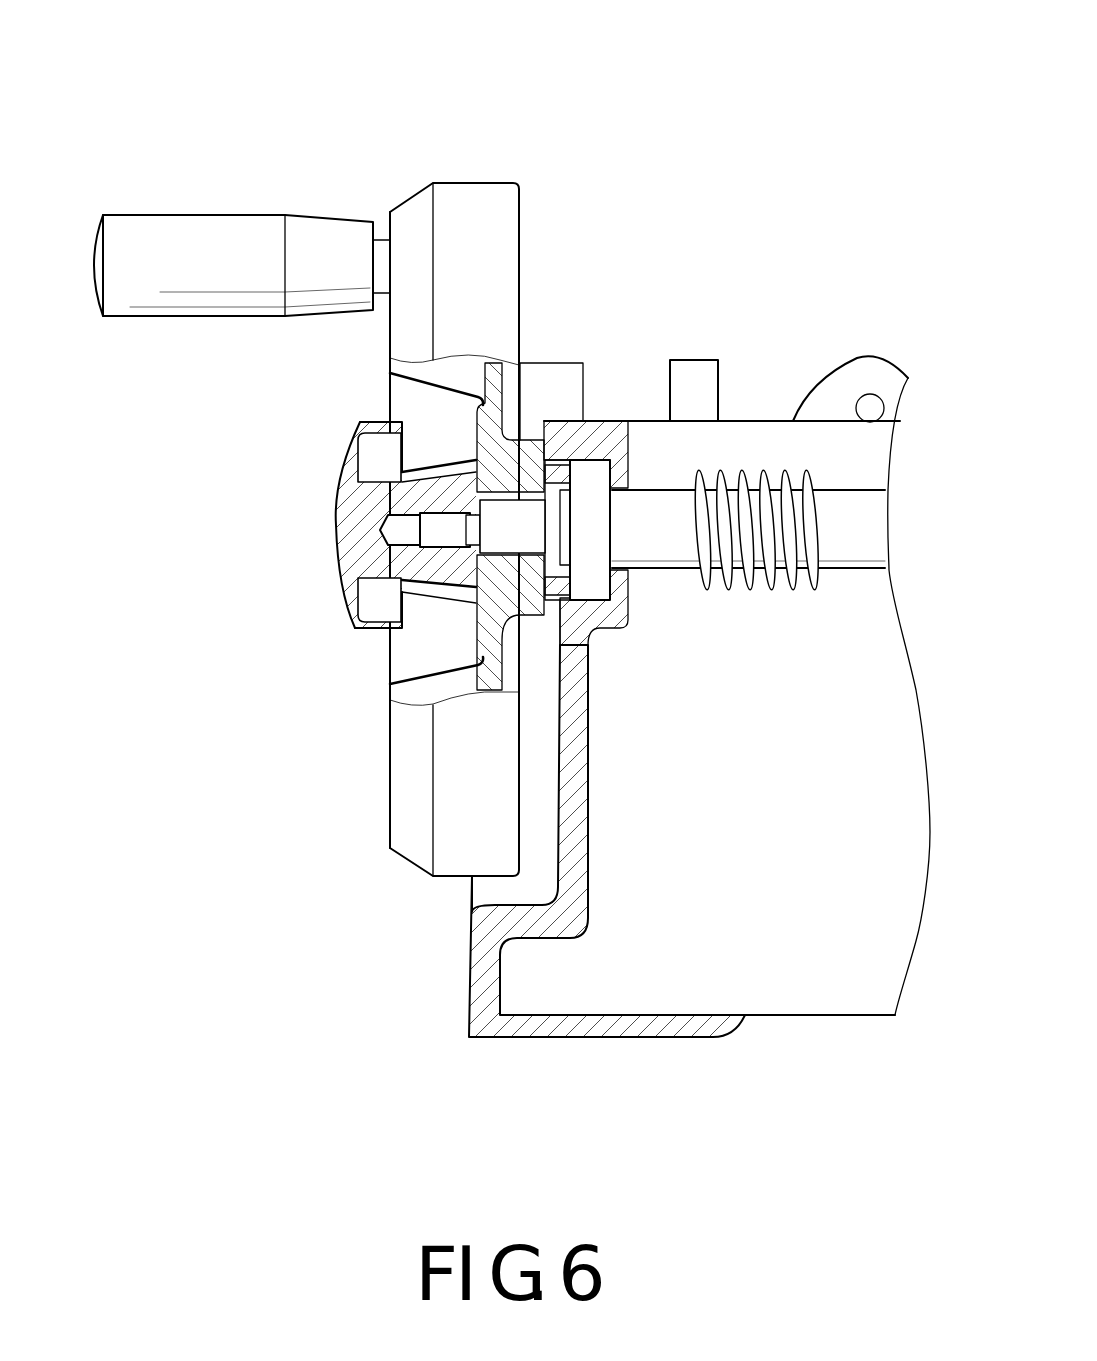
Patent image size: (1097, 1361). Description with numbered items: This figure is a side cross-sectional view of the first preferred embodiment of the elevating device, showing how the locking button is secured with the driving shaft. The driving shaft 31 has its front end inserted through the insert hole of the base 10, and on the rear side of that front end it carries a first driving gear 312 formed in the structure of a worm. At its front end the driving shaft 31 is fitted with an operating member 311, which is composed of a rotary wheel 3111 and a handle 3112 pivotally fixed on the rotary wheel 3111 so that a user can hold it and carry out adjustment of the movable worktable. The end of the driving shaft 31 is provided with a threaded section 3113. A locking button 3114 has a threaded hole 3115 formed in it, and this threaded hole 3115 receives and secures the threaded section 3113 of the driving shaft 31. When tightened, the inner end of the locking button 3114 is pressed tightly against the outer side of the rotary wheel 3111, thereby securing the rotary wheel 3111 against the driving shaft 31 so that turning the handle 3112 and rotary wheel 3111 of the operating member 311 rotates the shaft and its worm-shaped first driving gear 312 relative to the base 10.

The base 10 is at (452, 968).
The driving shaft 31 is at (663, 483).
The operating member 311 is at (480, 193).
The rotary wheel 3111 is at (410, 333).
The handle 3112 is at (190, 233).
The threaded section 3113 is at (398, 510).
The locking button 3114 is at (342, 527).
The threaded hole 3115 is at (440, 548).
The first driving gear 312 is at (773, 490).